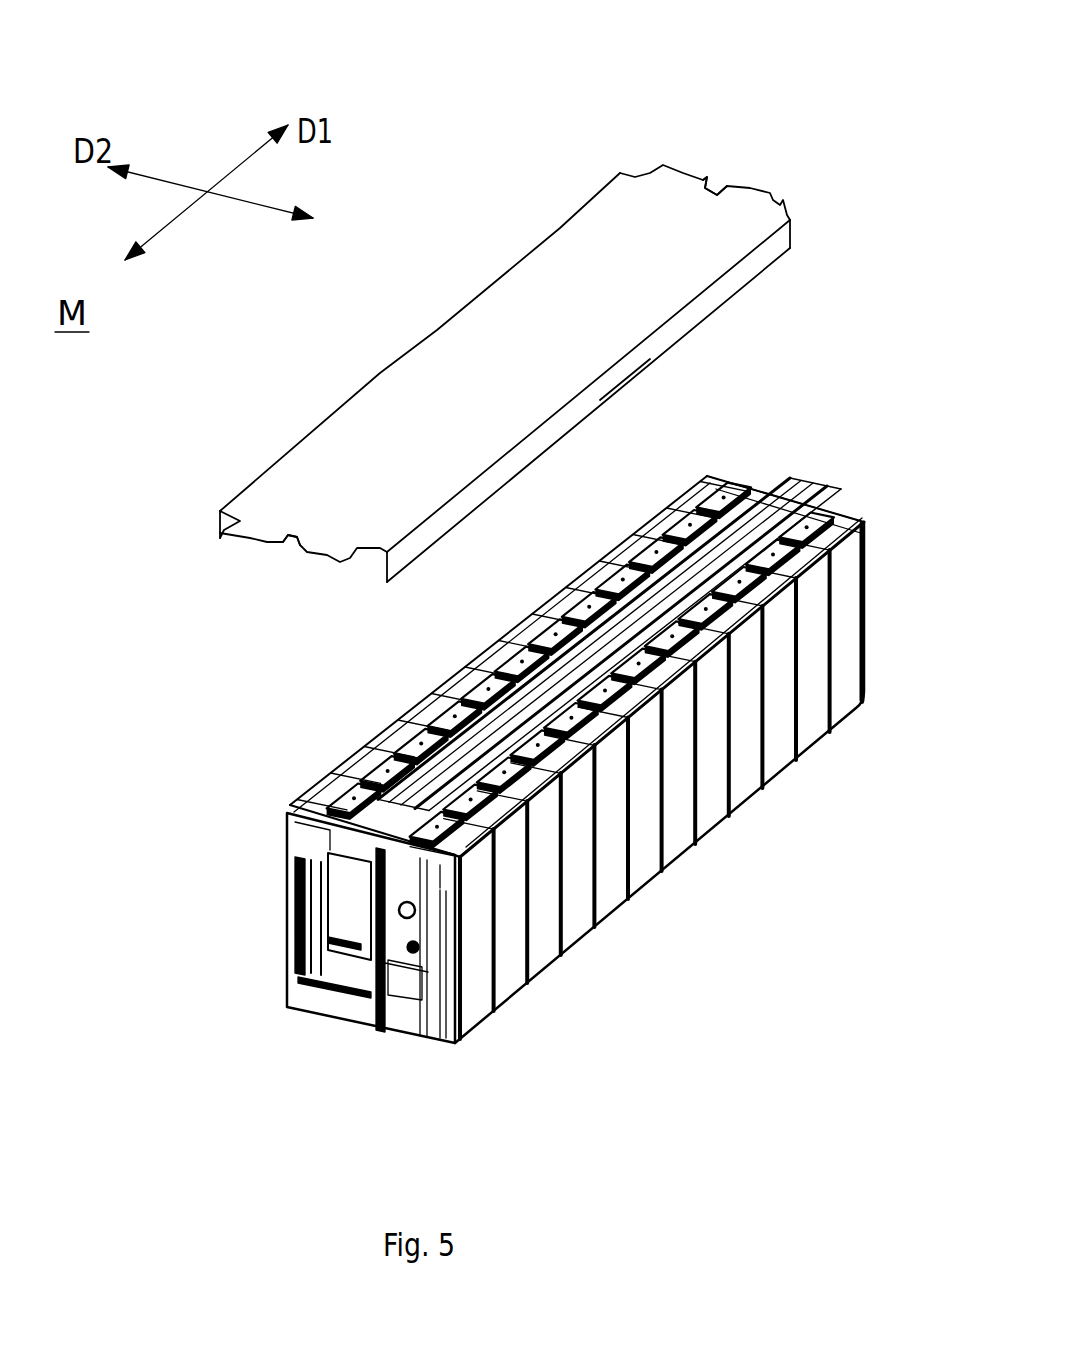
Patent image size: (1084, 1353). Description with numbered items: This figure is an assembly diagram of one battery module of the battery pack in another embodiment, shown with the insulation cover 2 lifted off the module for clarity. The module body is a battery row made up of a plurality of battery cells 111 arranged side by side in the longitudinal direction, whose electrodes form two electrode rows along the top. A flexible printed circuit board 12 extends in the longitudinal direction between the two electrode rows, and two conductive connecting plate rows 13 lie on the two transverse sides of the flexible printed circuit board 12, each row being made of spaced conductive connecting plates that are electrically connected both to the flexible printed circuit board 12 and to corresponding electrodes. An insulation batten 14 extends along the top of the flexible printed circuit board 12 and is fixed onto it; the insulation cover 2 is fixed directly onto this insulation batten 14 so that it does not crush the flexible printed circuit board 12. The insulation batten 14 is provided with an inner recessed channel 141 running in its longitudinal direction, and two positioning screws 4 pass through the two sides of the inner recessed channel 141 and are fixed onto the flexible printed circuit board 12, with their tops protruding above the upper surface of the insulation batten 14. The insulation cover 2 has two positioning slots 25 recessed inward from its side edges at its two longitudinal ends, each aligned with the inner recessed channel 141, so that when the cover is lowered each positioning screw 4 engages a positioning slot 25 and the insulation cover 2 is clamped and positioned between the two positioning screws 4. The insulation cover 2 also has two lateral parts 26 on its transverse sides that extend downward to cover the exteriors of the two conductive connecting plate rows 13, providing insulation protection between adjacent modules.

The insulation cover 2 is at (742, 120).
The positioning slot 25 is at (720, 183).
The lateral part 26 is at (767, 257).
The positioning screw 4 is at (787, 477).
The flexible printed circuit board 12 is at (352, 897).
The conductive connecting plate row 13 is at (757, 460).
The insulation batten 14 is at (777, 463).
The inner recessed channel 141 is at (437, 707).
The battery cell 111 is at (502, 973).